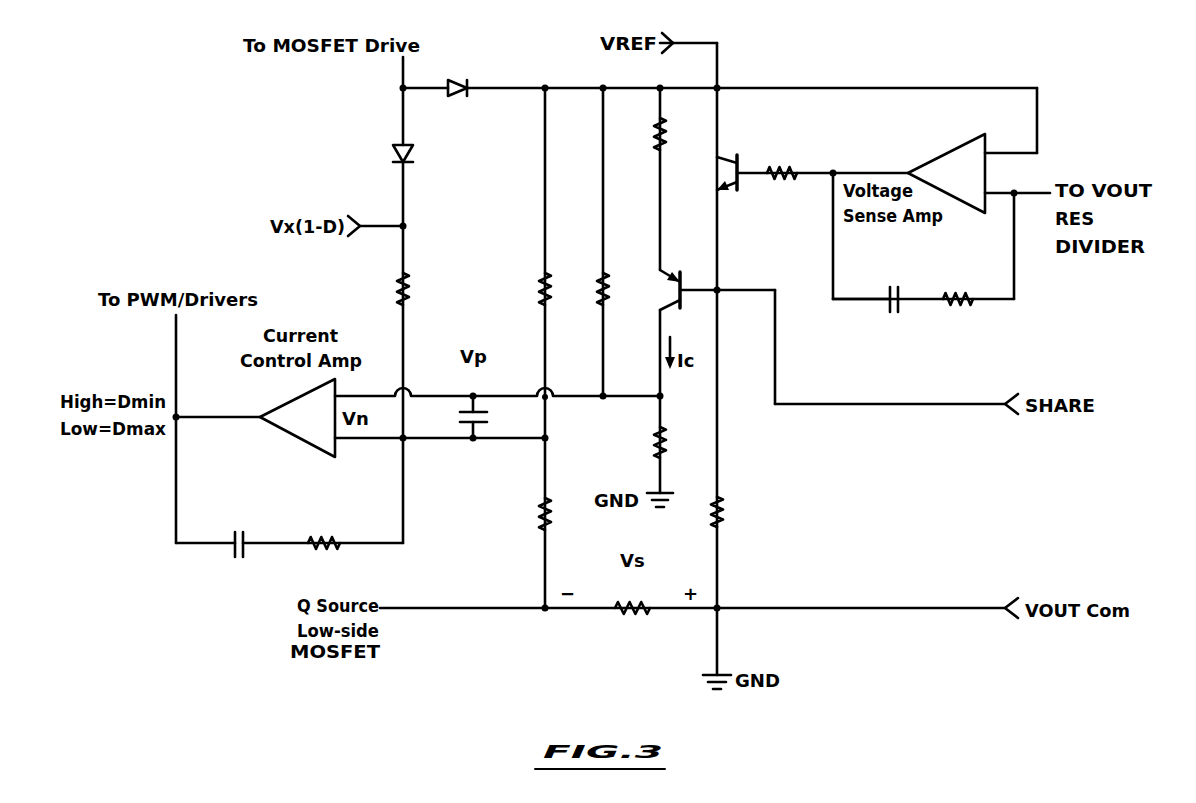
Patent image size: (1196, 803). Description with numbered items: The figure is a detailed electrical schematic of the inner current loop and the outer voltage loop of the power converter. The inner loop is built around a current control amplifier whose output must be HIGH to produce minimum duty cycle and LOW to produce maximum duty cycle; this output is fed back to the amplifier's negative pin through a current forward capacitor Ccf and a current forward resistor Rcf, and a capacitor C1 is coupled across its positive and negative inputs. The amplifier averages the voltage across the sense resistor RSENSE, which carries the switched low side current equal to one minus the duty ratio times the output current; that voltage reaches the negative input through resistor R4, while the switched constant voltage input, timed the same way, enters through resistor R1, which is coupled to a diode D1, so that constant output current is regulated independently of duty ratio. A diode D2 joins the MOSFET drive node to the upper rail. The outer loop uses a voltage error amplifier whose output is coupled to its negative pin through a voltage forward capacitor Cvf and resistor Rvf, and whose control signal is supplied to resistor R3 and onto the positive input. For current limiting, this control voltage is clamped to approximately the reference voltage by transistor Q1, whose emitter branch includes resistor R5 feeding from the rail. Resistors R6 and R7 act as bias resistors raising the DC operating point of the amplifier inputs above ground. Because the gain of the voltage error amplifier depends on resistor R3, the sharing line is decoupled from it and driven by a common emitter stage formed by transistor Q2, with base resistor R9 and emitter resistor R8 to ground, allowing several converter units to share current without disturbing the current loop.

The diode D1 is at (387, 155).
The diode D2 is at (461, 101).
The resistor R1 is at (389, 289).
The resistor R3 is at (644, 442).
The resistor R4 is at (530, 514).
The resistor R5 is at (645, 134).
The resistor R6 is at (530, 289).
The resistor R7 is at (587, 289).
The resistor R8 is at (732, 512).
The resistor R9 is at (782, 164).
The current forward resistor Rcf is at (326, 533).
The current forward capacitor Ccf is at (238, 532).
The voltage forward resistor Rvf is at (960, 289).
The voltage forward capacitor Cvf is at (871, 287).
The capacitor C1 is at (461, 417).
The sense resistor RSENSE is at (630, 597).
The transistor Q1 is at (656, 290).
The transistor Q2 is at (716, 172).